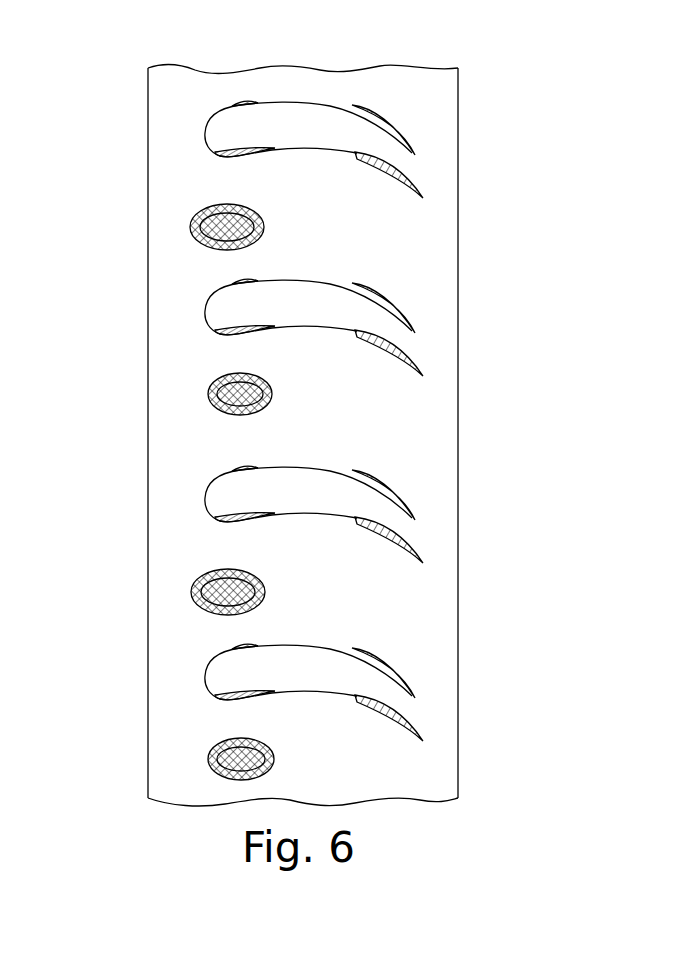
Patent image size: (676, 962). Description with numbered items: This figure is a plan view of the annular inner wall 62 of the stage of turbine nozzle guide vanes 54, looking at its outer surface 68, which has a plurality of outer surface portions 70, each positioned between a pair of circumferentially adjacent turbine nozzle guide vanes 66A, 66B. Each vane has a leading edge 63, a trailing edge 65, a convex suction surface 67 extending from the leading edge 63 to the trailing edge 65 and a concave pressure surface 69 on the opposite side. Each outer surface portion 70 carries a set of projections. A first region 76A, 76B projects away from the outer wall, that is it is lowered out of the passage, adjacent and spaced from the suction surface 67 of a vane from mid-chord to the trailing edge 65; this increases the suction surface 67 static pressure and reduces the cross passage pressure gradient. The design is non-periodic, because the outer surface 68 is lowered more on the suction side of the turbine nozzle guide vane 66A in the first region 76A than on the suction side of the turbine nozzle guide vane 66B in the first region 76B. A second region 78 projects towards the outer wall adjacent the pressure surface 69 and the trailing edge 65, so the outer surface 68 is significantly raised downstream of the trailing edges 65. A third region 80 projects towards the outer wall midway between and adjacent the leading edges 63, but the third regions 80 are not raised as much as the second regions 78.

The stage of turbine nozzle guide vanes 54 is at (133, 280).
The annular inner wall 62 is at (167, 178).
The leading edge 63 is at (203, 131).
The trailing edge 65 is at (407, 162).
The turbine nozzle guide vane 66A is at (363, 140).
The turbine nozzle guide vane 66B is at (357, 320).
The convex suction surface 67 is at (328, 104).
The outer surface 68 is at (175, 297).
The pressure surface 69 is at (304, 149).
The outer surface portion 70 is at (250, 85).
The first region 76A is at (403, 133).
The first region 76B is at (444, 492).
The second region 78 is at (423, 182).
The third region 80 is at (190, 228).